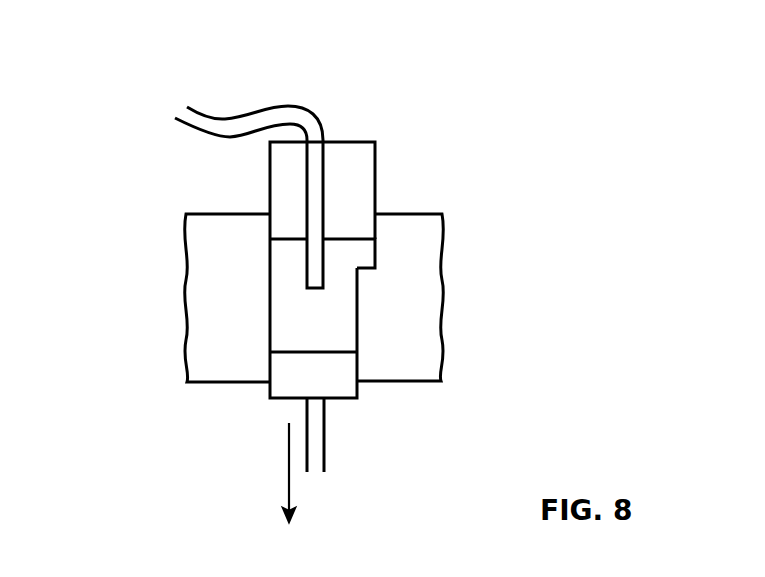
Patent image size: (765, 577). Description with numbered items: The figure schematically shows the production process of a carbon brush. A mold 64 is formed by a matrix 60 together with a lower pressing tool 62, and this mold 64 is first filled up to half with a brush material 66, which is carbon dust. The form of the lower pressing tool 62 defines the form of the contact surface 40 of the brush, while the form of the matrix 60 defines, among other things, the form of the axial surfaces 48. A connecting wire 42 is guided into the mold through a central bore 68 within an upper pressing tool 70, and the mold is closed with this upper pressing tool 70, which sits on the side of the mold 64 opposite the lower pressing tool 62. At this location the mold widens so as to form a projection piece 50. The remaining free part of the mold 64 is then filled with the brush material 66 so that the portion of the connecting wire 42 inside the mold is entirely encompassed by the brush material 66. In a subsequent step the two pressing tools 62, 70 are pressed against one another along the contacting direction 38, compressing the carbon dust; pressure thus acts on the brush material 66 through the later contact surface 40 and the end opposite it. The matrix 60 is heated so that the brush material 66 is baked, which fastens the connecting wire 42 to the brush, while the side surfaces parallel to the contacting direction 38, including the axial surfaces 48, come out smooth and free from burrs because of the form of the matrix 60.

The contacting direction 38 is at (289, 465).
The contact surface 40 is at (300, 352).
The connecting wire 42 is at (207, 121).
The axial surfaces 48 is at (270, 288).
The projection piece 50 is at (365, 255).
The matrix 60 is at (203, 325).
The lower pressing tool 62 is at (341, 388).
The mold 64 is at (407, 357).
The brush material 66 is at (340, 338).
The central bore 68 is at (324, 194).
The upper pressing tool 70 is at (347, 157).